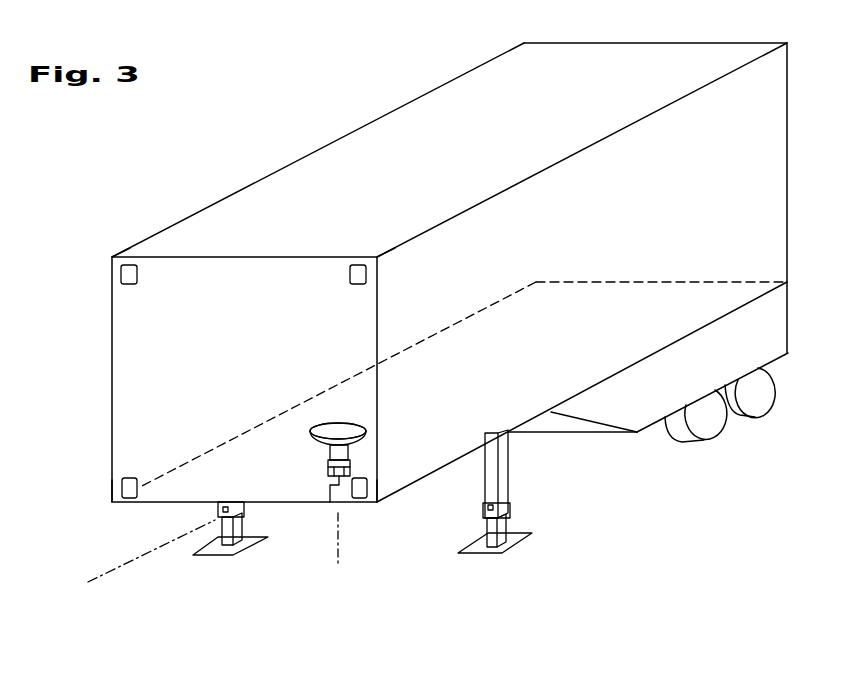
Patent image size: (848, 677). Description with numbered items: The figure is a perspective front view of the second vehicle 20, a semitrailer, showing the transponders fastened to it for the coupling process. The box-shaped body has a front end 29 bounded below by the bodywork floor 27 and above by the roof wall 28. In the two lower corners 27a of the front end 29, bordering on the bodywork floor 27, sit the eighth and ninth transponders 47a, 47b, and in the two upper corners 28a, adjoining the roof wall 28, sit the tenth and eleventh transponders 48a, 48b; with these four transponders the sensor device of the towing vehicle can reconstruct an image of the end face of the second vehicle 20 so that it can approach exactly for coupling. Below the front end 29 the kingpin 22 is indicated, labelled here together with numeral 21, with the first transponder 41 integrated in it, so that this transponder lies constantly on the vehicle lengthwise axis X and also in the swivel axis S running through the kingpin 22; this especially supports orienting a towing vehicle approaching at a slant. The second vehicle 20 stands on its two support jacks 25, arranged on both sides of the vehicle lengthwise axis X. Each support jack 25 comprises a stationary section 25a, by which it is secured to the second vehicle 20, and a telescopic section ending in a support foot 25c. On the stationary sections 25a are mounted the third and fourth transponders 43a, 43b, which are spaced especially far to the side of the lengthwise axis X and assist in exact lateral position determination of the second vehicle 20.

The second vehicle 20 is at (404, 354).
The sensor unit 21 is at (309, 426).
The kingpin 22 is at (198, 383).
The support jack 25 is at (584, 530).
The stationary section 25a is at (507, 443).
The support foot 25c is at (550, 489).
The bodywork floor 27 is at (492, 390).
The lower corner 27a is at (112, 502).
The roof wall 28 is at (556, 95).
The upper corner 28a is at (377, 257).
The front end 29 is at (207, 343).
The first transponder 41 is at (198, 458).
The third transponder 43a is at (510, 530).
The fourth transponder 43b is at (238, 583).
The eighth transponder 47a is at (360, 498).
The ninth transponder 47b is at (125, 497).
The tenth transponder 48a is at (350, 275).
The eleventh transponder 48b is at (122, 275).
The swivel axis S is at (343, 543).
The vehicle lengthwise axis X is at (93, 583).